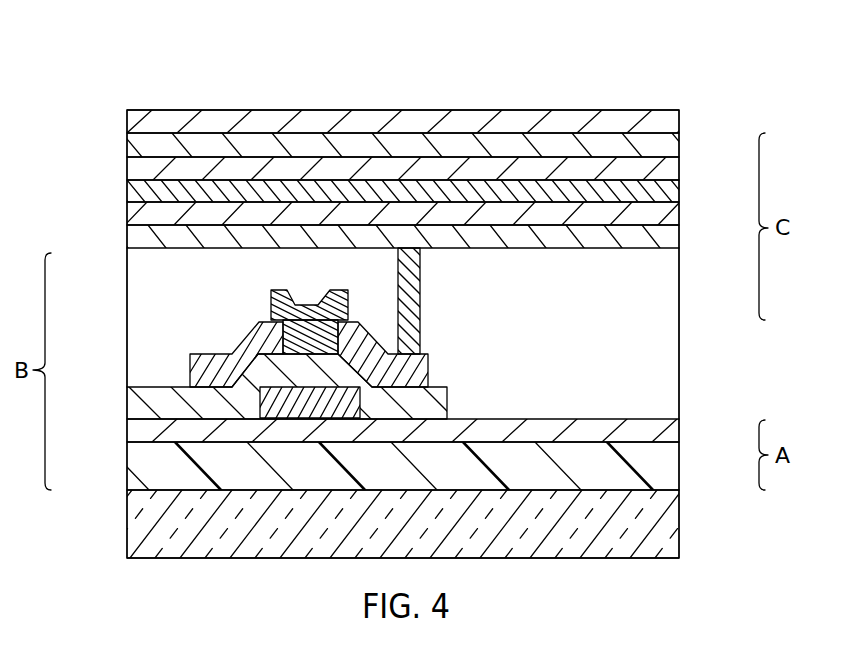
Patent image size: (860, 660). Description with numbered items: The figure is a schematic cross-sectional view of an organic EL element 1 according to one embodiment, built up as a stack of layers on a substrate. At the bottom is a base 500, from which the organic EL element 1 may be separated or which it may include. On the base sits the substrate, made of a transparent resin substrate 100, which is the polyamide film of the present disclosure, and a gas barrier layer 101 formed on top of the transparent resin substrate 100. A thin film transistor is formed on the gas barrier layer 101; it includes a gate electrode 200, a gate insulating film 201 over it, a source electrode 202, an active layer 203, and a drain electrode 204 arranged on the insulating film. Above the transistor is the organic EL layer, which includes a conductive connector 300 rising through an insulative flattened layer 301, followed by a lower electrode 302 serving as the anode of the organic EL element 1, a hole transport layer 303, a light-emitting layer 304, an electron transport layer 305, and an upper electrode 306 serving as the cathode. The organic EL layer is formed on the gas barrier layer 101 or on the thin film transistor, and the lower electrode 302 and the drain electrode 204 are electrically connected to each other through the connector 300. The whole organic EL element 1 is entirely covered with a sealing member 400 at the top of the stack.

The organic EL element 1 is at (207, 82).
The transparent resin substrate 100 is at (680, 465).
The gas barrier layer 101 is at (680, 430).
The gate electrode 200 is at (300, 413).
The gate insulating film 201 is at (133, 405).
The source electrode 202 is at (200, 372).
The active layer 203 is at (281, 300).
The drain electrode 204 is at (344, 312).
The conductive connector 300 is at (420, 299).
The insulative flattened layer 301 is at (680, 272).
The lower electrode 302 is at (680, 237).
The hole transport layer 303 is at (680, 215).
The light-emitting layer 304 is at (680, 192).
The electron transport layer 305 is at (680, 168).
The upper electrode 306 is at (680, 144).
The sealing member 400 is at (680, 122).
The base 500 is at (680, 532).